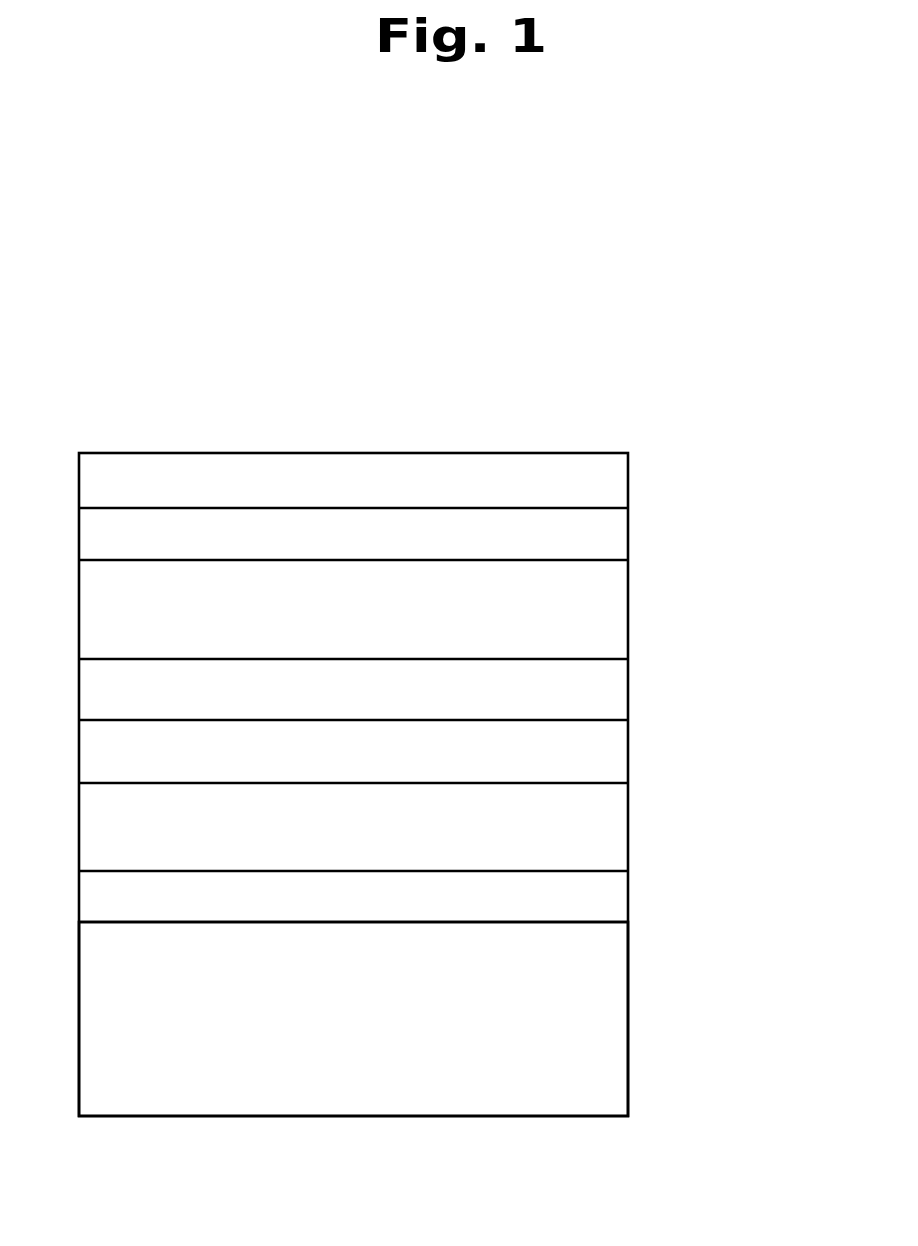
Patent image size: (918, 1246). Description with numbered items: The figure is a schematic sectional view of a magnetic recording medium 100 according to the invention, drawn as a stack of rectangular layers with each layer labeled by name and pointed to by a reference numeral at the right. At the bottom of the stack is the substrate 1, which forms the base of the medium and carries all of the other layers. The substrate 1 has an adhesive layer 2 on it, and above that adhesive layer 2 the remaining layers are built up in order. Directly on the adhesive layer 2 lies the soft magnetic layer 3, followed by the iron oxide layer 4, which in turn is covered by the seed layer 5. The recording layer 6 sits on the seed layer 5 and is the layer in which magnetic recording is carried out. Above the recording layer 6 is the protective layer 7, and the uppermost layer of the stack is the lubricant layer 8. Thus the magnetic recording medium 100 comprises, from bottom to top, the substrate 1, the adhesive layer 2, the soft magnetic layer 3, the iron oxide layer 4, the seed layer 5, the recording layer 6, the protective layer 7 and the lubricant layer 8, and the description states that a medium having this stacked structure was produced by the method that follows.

The magnetic recording medium 100 is at (360, 320).
The substrate 1 is at (626, 993).
The adhesive layer 2 is at (628, 898).
The soft magnetic layer 3 is at (628, 822).
The iron oxide layer 4 is at (628, 748).
The seed layer 5 is at (628, 684).
The recording layer 6 is at (628, 606).
The protective layer 7 is at (628, 532).
The lubricant layer 8 is at (628, 478).